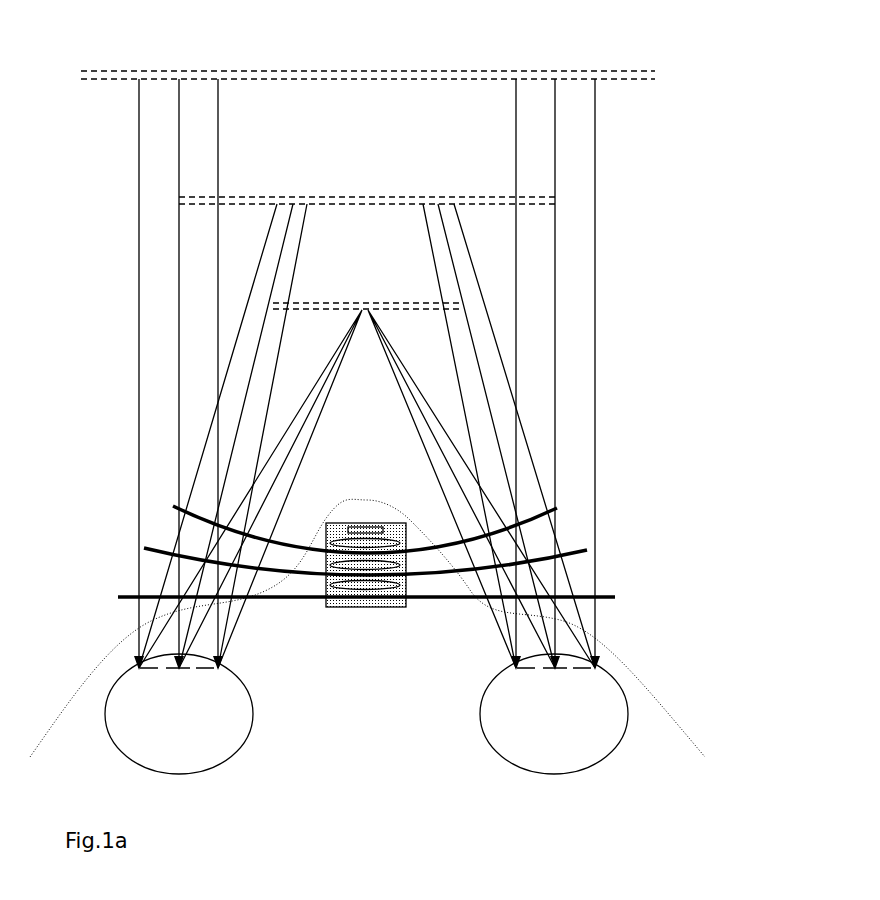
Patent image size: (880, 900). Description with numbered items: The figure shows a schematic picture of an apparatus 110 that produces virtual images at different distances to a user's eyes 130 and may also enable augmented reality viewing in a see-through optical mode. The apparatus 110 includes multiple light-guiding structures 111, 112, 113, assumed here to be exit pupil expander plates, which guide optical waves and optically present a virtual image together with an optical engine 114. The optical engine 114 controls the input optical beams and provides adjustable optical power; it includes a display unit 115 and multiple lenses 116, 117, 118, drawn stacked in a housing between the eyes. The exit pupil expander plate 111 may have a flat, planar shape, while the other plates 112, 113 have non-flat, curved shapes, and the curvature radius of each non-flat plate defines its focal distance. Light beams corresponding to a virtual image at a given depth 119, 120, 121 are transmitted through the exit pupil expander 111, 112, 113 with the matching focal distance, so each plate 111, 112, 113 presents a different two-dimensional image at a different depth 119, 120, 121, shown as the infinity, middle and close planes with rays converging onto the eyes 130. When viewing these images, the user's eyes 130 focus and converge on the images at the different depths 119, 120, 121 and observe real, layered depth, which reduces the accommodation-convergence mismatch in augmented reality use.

The apparatus 110 is at (83, 458).
The light-guiding structure 111 is at (118, 597).
The light-guiding structure 112 is at (144, 548).
The light-guiding structure 113 is at (173, 506).
The optical engine 114 is at (407, 523).
The display unit 115 is at (364, 530).
The lens 116 is at (343, 543).
The lens 117 is at (346, 570).
The lens 118 is at (385, 587).
The depth 119 is at (613, 71).
The depth 120 is at (420, 196).
The depth 121 is at (433, 302).
The user's eyes 130 is at (250, 720).